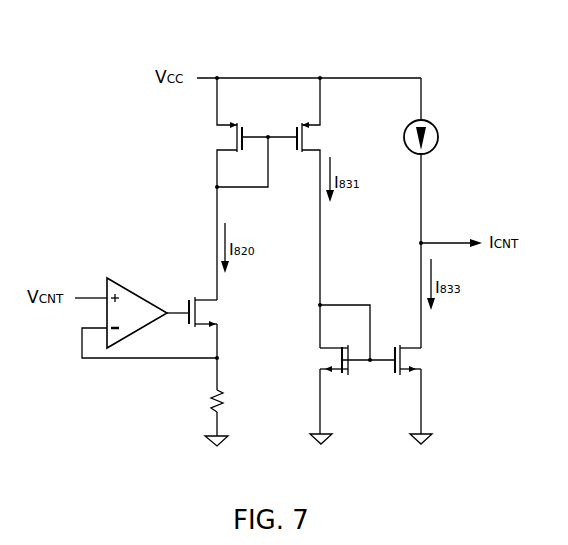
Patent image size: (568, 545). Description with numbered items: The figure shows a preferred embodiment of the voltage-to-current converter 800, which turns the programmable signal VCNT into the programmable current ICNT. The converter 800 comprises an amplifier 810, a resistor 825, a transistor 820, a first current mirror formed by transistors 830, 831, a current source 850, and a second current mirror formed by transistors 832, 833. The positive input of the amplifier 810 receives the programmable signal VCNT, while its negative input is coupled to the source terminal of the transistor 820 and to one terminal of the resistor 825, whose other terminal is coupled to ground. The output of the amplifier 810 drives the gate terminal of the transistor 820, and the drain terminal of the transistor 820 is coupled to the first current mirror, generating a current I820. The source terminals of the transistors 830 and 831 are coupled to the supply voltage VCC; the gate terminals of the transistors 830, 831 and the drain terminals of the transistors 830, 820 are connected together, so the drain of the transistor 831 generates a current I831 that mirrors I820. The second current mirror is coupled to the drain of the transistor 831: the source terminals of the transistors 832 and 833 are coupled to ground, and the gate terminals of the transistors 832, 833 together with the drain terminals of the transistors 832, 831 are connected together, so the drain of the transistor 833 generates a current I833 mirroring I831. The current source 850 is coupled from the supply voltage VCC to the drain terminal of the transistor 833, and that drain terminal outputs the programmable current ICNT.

The voltage-to-current converter 800 is at (552, 52).
The amplifier 810 is at (147, 312).
The transistor 820 is at (210, 327).
The resistor 825 is at (200, 402).
The transistor 830 is at (237, 133).
The transistor 831 is at (327, 213).
The transistor 832 is at (339, 373).
The transistor 833 is at (427, 394).
The current source 850 is at (441, 213).